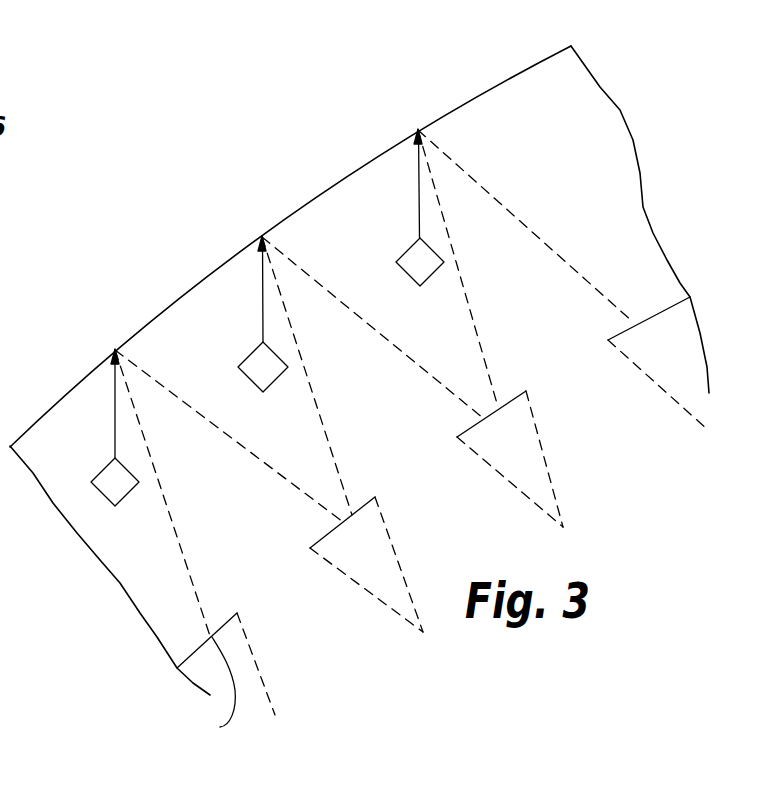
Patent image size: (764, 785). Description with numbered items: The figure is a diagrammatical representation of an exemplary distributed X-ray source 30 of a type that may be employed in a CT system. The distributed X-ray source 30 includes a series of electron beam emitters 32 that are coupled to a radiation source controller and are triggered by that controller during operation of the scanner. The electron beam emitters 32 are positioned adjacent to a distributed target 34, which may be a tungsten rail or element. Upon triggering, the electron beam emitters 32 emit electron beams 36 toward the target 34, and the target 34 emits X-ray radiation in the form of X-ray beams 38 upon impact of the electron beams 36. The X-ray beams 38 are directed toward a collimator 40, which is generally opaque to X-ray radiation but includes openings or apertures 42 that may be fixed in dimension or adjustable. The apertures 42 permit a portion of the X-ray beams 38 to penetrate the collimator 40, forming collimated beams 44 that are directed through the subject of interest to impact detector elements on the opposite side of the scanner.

The distributed X-ray source 30 is at (692, 103).
The electron beam emitters 32 is at (100, 467).
The distributed target 34 is at (68, 388).
The electron beams 36 is at (115, 383).
The X-ray beams 38 is at (180, 535).
The collimator 40 is at (220, 727).
The apertures 42 is at (286, 586).
The collimated beams 44 is at (319, 650).